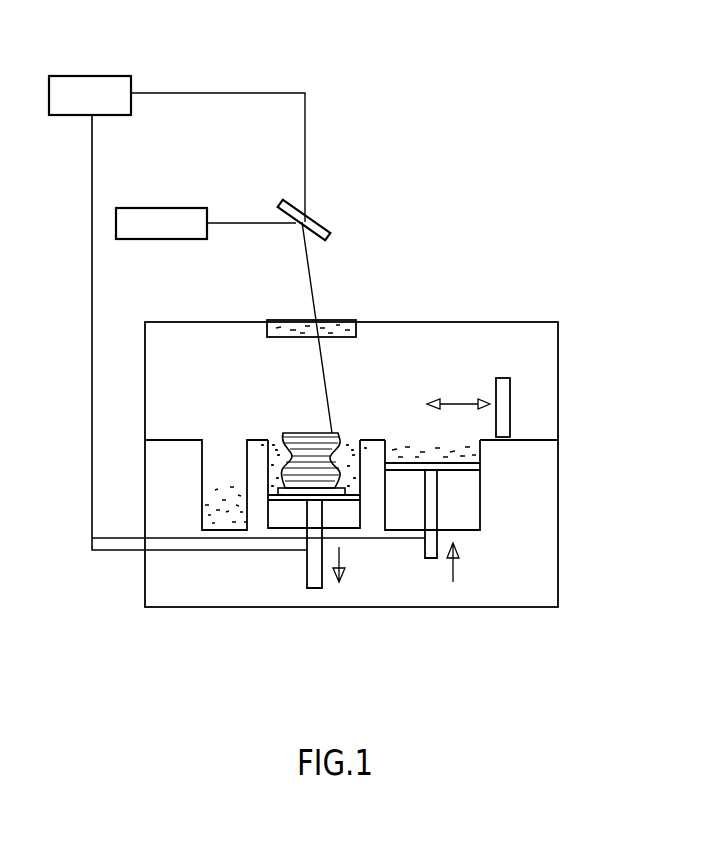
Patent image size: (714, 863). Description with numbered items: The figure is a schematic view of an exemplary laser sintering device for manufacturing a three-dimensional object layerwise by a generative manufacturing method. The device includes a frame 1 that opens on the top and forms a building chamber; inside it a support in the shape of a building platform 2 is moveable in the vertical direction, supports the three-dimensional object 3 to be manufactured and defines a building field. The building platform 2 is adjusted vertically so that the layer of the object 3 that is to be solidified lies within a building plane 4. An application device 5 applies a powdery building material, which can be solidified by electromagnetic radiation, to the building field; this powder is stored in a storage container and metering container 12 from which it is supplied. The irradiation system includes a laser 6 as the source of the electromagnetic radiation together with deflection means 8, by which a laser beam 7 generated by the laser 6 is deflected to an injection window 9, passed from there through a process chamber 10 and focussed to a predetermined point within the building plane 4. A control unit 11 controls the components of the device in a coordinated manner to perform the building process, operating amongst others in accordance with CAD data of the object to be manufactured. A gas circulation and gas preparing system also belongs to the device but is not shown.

The frame 1 is at (363, 520).
The building platform 2 is at (333, 500).
The three-dimensional object 3 is at (285, 440).
The building plane 4 is at (366, 440).
The application device 5 is at (503, 393).
The laser 6 is at (160, 208).
The laser beam 7 is at (228, 223).
The deflection means 8 is at (317, 218).
The injection window 9 is at (337, 330).
The process chamber 10 is at (558, 530).
The control unit 11 is at (106, 77).
The storage container and metering container 12 is at (480, 467).